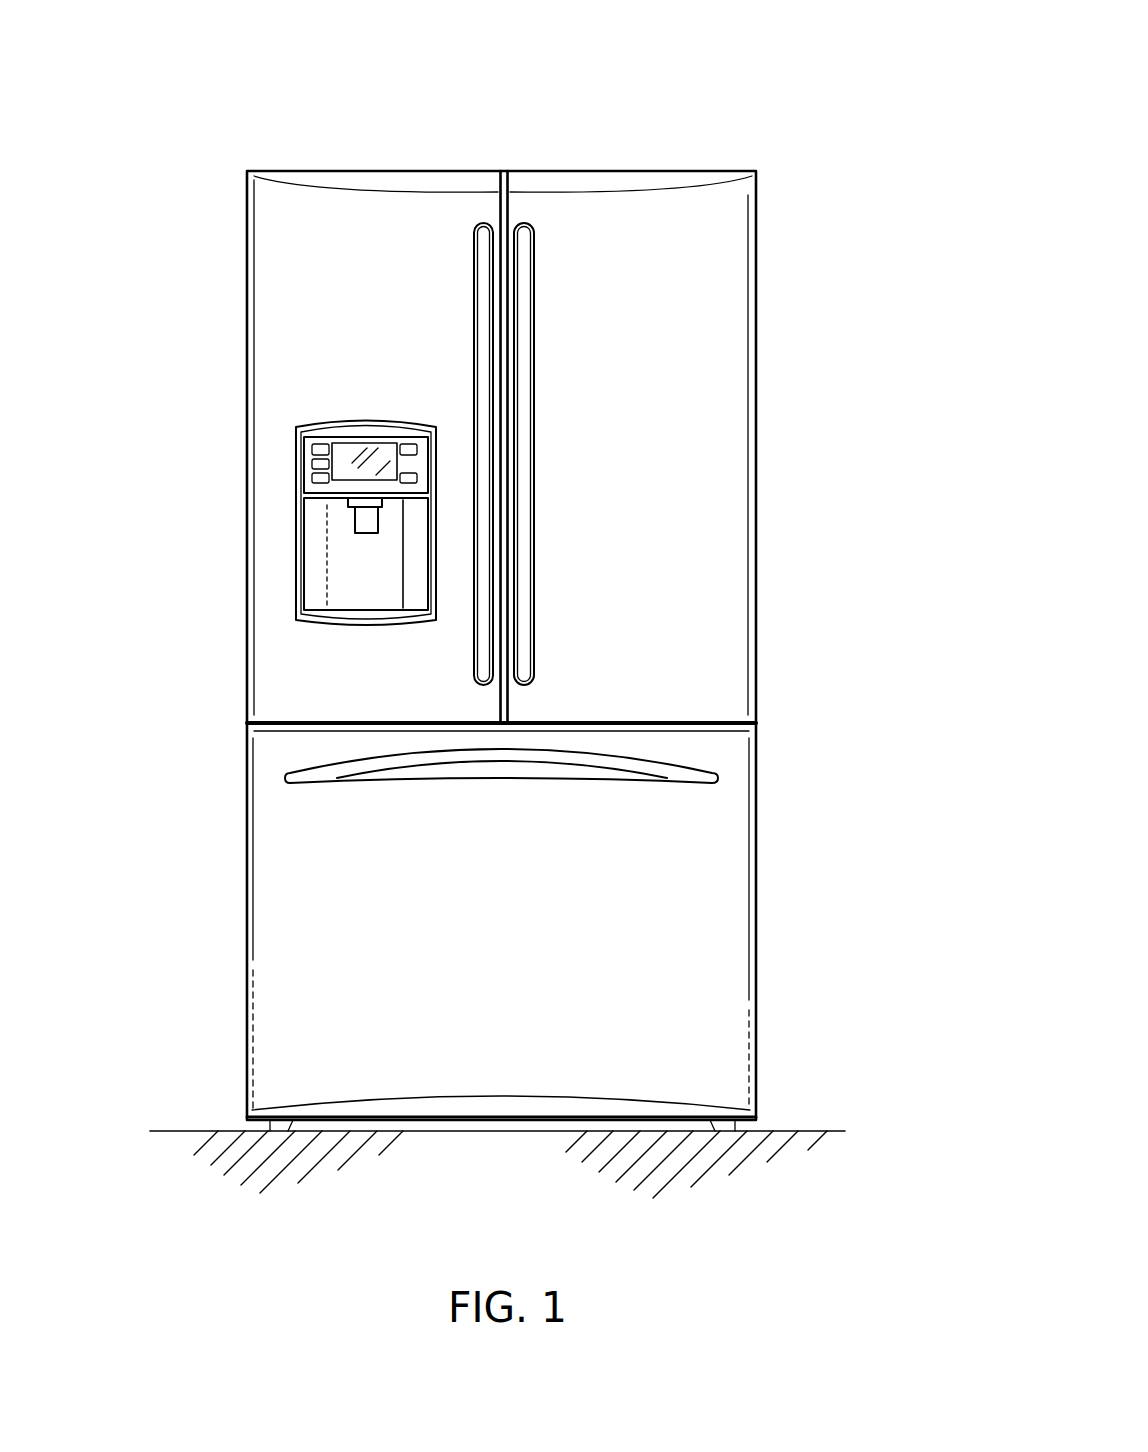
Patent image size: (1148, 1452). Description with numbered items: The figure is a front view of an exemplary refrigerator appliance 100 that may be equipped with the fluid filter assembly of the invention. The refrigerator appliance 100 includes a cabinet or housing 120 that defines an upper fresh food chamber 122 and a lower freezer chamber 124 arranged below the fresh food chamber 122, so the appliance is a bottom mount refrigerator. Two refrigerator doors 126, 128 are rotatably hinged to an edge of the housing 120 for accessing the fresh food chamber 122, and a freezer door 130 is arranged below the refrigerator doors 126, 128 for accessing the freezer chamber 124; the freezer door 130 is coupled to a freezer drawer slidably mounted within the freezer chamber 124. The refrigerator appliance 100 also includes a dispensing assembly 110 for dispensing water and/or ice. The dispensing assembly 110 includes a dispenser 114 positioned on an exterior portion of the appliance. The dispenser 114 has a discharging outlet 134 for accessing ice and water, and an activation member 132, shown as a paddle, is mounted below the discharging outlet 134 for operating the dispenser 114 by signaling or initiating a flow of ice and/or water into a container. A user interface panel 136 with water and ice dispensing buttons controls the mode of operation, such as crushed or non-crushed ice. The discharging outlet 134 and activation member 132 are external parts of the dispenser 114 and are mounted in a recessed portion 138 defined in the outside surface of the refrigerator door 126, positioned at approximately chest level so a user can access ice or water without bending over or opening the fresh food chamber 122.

The refrigerator appliance 100 is at (535, 563).
The dispensing assembly 110 is at (318, 407).
The dispenser 114 is at (360, 568).
The housing 120 is at (245, 937).
The fresh food chamber 122 is at (710, 448).
The freezer chamber 124 is at (710, 862).
The refrigerator door 126 is at (279, 275).
The refrigerator door 128 is at (730, 320).
The freezer door 130 is at (722, 982).
The activation member 132 is at (352, 512).
The discharging outlet 134 is at (365, 510).
The user interface panel 136 is at (308, 457).
The recessed portion 138 is at (385, 587).